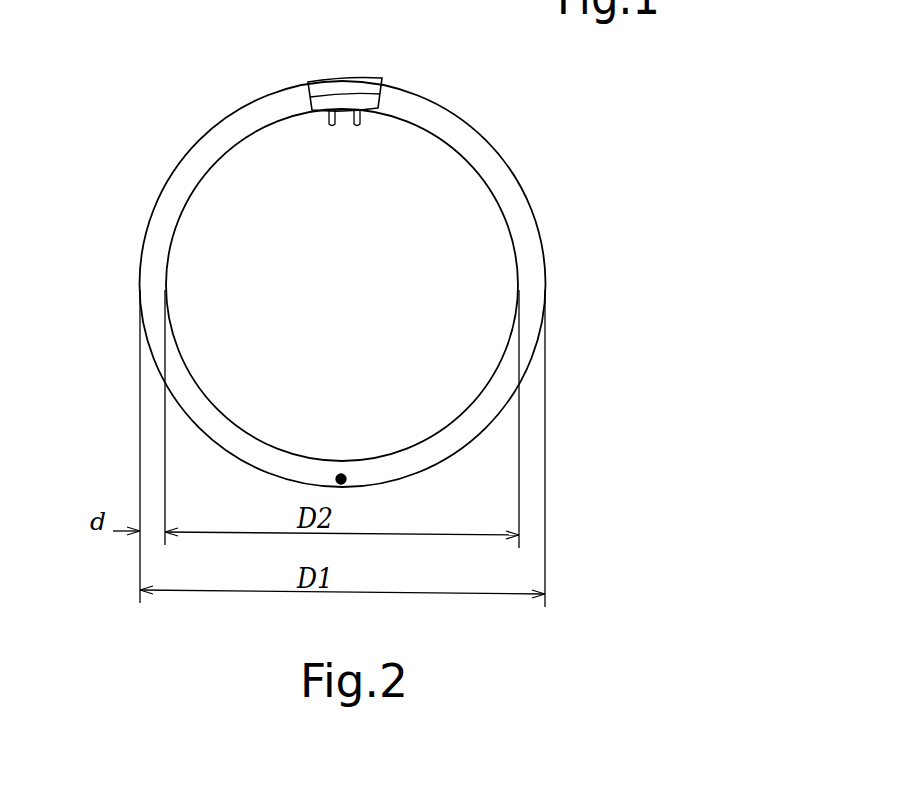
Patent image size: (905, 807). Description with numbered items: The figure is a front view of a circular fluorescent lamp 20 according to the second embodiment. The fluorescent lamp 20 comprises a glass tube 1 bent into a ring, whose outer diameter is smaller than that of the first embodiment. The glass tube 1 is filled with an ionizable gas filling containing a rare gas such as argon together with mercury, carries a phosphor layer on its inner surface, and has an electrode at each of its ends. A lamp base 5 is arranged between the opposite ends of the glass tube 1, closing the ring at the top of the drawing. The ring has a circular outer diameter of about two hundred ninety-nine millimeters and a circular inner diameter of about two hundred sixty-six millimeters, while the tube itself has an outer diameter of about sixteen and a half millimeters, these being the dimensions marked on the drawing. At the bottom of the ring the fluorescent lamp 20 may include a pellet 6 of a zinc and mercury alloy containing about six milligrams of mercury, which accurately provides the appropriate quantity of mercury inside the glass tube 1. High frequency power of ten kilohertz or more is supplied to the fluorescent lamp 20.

The glass tube 1 is at (472, 127).
The fluorescent lamp 20 is at (523, 186).
The lamp base 5 is at (367, 78).
The pellet 6 is at (341, 474).